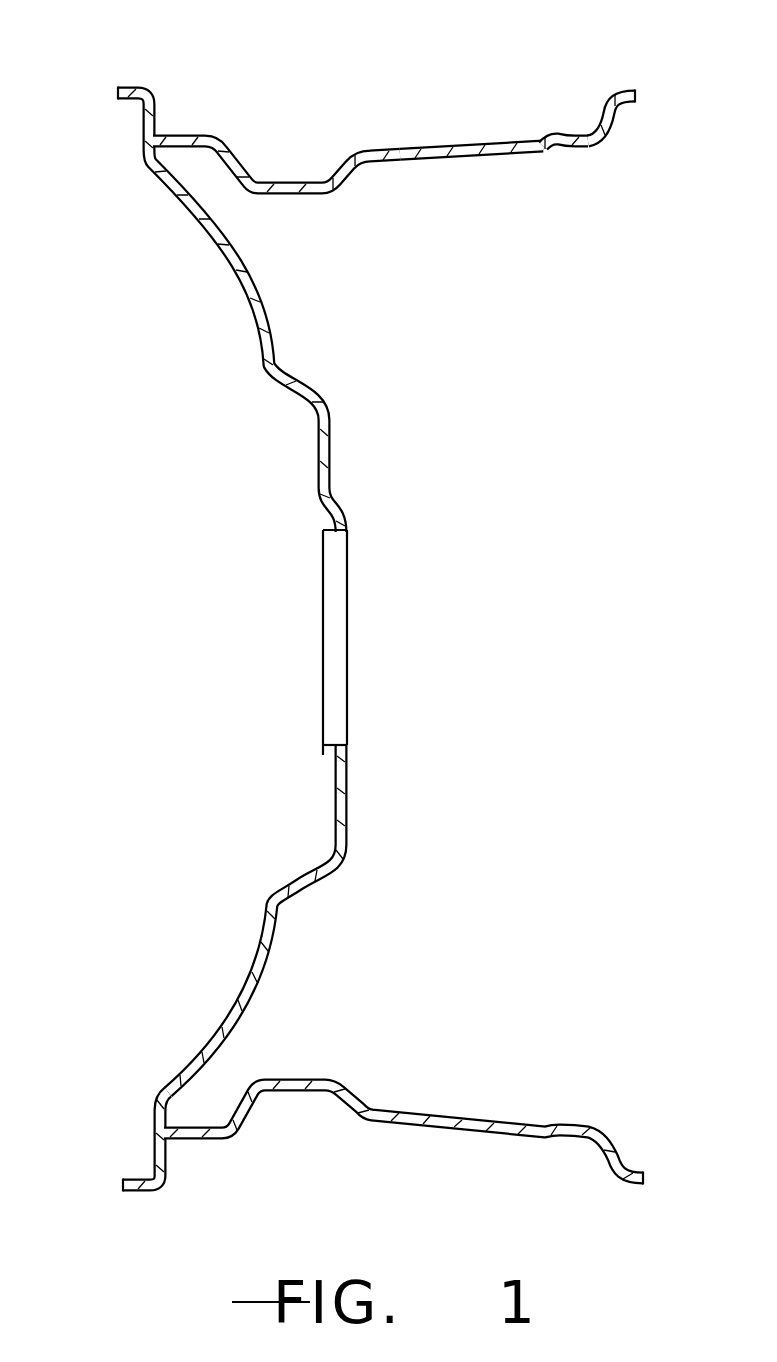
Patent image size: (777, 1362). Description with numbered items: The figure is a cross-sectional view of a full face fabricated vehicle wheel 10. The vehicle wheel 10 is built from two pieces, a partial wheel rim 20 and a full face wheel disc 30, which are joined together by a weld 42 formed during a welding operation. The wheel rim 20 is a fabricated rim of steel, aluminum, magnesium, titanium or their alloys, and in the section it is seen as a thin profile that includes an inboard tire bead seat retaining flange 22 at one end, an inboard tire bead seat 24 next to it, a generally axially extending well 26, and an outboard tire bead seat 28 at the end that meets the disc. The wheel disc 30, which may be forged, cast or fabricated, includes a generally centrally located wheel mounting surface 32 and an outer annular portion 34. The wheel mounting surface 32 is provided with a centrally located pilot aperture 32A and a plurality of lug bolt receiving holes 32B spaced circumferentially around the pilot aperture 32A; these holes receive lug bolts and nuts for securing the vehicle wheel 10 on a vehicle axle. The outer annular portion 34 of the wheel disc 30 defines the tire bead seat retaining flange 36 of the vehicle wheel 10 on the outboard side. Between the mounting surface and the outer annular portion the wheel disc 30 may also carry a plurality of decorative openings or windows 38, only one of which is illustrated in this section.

The vehicle wheel 10 is at (355, 596).
The wheel rim 20 is at (399, 132).
The inboard tire bead seat retaining flange 22 is at (598, 103).
The inboard tire bead seat 24 is at (563, 135).
The well 26 is at (343, 160).
The outboard tire bead seat 28 is at (188, 132).
The wheel disc 30 is at (268, 886).
The wheel mounting surface 32 is at (317, 445).
The pilot aperture 32A is at (347, 553).
The lug bolt receiving holes 32B is at (347, 797).
The outer annular portion 34 is at (170, 1092).
The outboard tire bead seat retaining flange 36 is at (160, 133).
The decorative openings 38 is at (258, 298).
The weld 42 is at (162, 133).